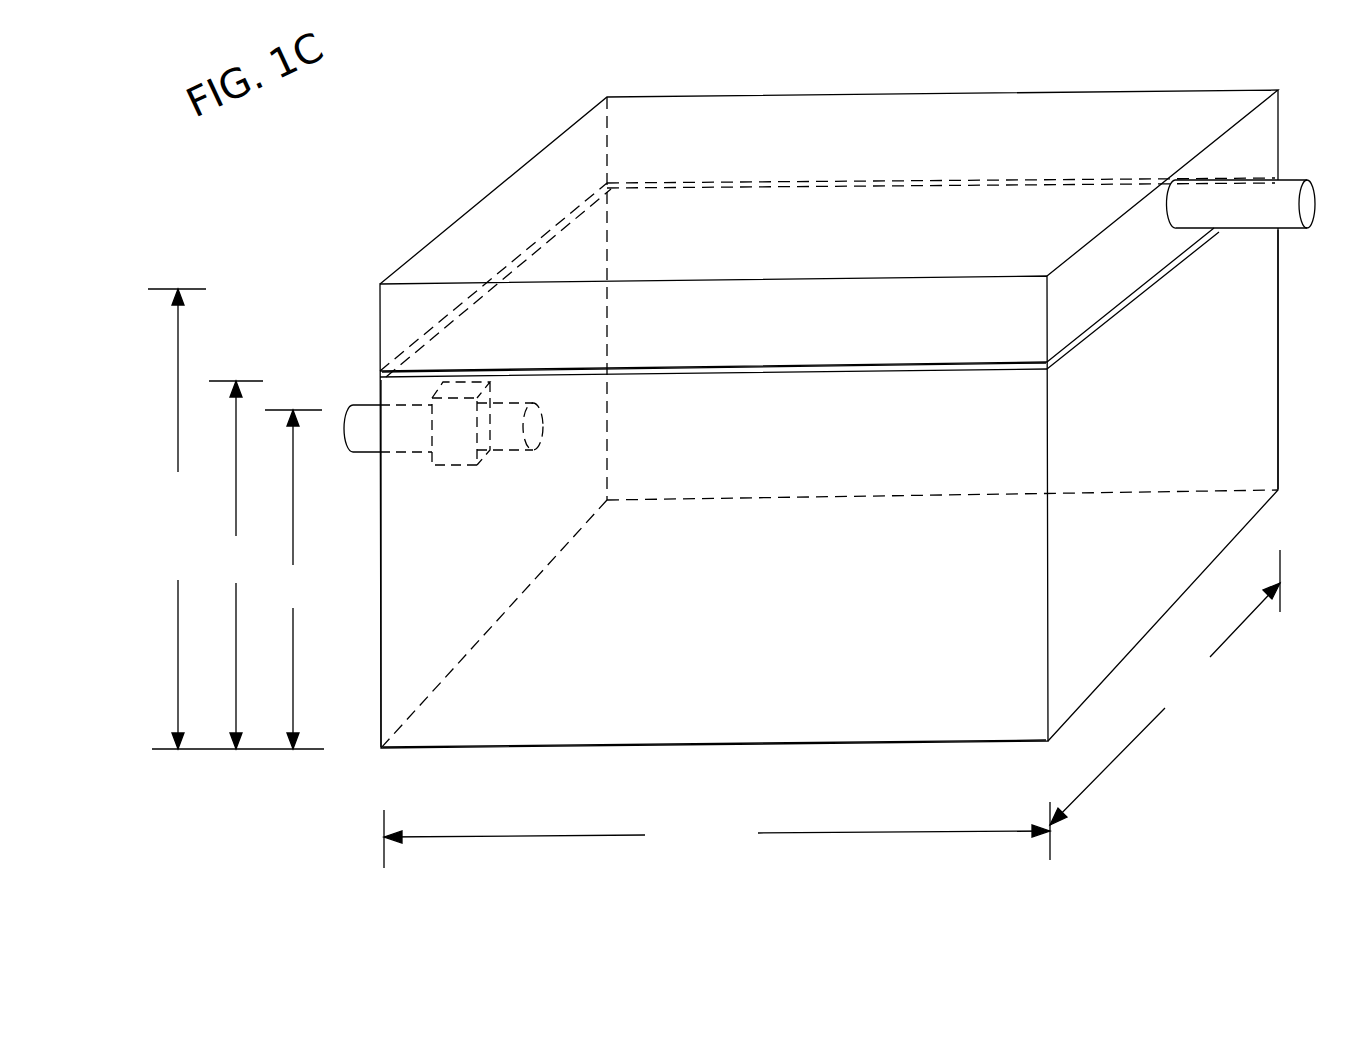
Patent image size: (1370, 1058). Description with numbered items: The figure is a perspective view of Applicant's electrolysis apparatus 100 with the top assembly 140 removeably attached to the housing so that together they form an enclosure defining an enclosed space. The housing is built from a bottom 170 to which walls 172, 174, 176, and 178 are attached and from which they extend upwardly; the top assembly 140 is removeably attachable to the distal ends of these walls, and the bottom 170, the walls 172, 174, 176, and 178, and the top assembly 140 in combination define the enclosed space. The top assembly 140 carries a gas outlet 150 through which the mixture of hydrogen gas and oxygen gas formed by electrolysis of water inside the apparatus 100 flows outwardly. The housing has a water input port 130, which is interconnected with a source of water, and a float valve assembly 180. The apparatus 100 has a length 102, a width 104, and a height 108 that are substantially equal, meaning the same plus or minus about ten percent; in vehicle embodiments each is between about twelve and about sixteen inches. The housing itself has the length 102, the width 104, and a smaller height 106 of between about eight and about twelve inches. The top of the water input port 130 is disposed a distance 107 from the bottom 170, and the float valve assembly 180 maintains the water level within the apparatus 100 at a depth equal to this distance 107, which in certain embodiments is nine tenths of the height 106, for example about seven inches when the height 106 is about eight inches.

The electrolysis apparatus 100 is at (797, 875).
The length 102 is at (717, 835).
The width 104 is at (1165, 687).
The height 106 is at (228, 565).
The distance 107 is at (294, 579).
The height 108 is at (226, 519).
The water input port 130 is at (361, 434).
The top assembly 140 is at (468, 194).
The gas outlet 150 is at (1252, 208).
The bottom 170 is at (777, 638).
The wall 172 is at (401, 563).
The wall 174 is at (1255, 324).
The wall 176 is at (882, 413).
The wall 178 is at (506, 490).
The float valve assembly 180 is at (453, 445).